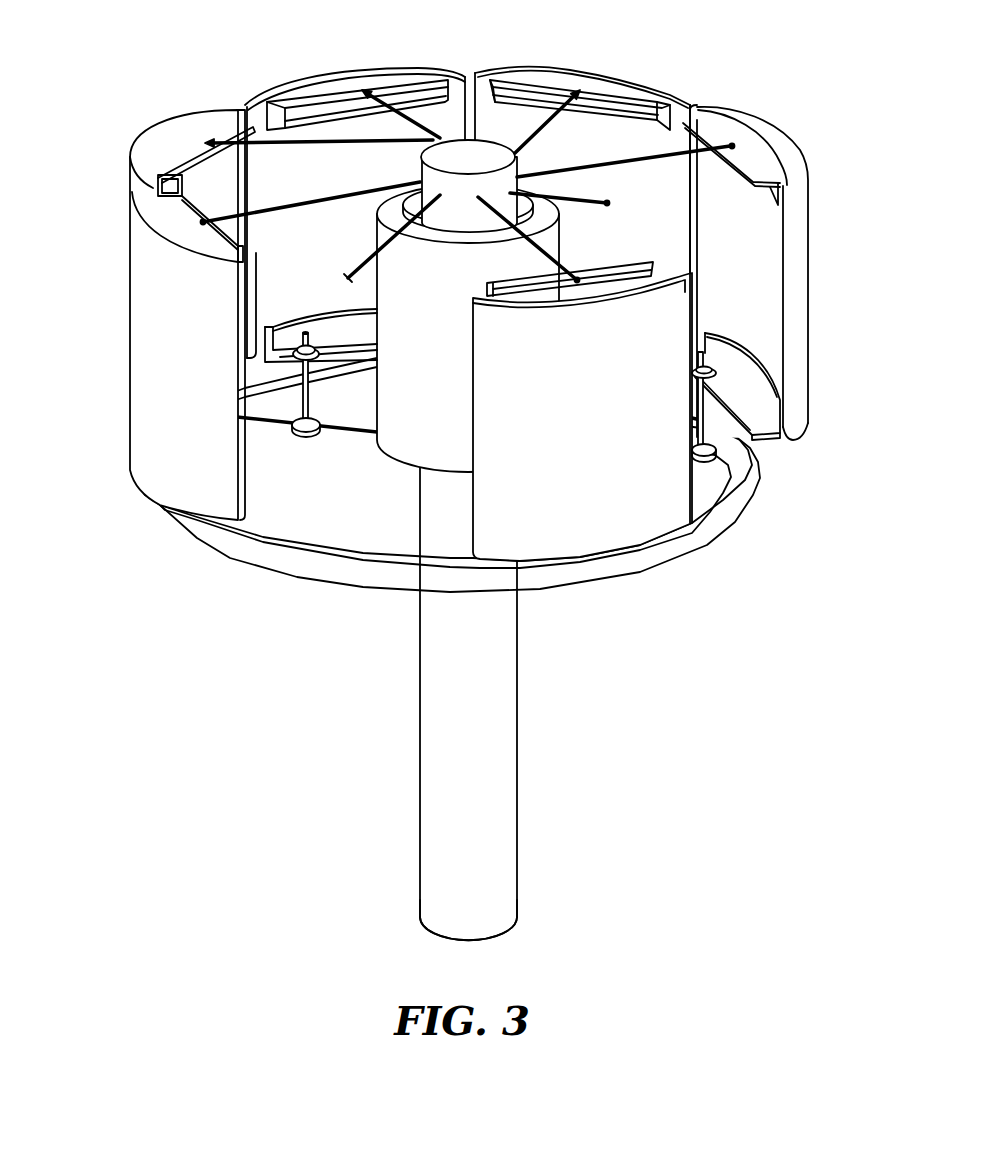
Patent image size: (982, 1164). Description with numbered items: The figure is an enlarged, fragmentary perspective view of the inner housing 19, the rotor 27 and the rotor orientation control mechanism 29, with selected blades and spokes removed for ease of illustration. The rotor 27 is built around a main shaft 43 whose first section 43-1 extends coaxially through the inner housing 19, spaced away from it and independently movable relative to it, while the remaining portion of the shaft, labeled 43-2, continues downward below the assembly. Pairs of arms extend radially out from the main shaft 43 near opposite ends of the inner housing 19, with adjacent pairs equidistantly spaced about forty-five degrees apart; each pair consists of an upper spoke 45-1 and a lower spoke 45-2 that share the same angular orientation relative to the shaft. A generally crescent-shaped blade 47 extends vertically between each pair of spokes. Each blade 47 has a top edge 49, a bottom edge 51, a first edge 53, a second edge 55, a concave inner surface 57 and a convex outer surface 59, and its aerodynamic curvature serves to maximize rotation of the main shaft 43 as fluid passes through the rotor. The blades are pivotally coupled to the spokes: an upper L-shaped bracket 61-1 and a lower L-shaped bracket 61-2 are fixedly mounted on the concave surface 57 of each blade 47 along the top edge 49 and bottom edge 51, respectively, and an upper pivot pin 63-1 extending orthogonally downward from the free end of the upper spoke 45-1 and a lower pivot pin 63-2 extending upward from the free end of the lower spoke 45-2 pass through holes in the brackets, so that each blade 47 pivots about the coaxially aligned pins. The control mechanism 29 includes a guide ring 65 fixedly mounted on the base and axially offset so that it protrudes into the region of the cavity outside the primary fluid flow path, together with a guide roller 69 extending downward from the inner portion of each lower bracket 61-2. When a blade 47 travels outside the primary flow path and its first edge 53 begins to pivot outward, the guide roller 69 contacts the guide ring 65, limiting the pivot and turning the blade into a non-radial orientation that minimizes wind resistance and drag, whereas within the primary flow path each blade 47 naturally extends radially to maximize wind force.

The inner housing 19 is at (468, 328).
The rotor 27 is at (582, 865).
The control mechanism 29 is at (709, 564).
The main shaft 43 is at (468, 703).
The first section 43-1 is at (468, 186).
The lower shaft end 43-2 is at (433, 898).
The upper spoke 45-1 is at (327, 193).
The lower spoke 45-2 is at (333, 437).
The blade 47 is at (527, 28).
The top edge 49 is at (768, 122).
The bottom edge 51 is at (793, 442).
The first edge 53 is at (698, 108).
The second edge 55 is at (797, 212).
The concave surface 57 is at (757, 228).
The convex surface 59 is at (808, 173).
The upper L-shaped bracket 61-1 is at (408, 84).
The lower L-shaped bracket 61-2 is at (322, 325).
The upper pivot pin 63-1 is at (203, 138).
The lower pivot pin 63-2 is at (735, 390).
The guide ring 65 is at (210, 540).
The guide roller 69 is at (307, 430).